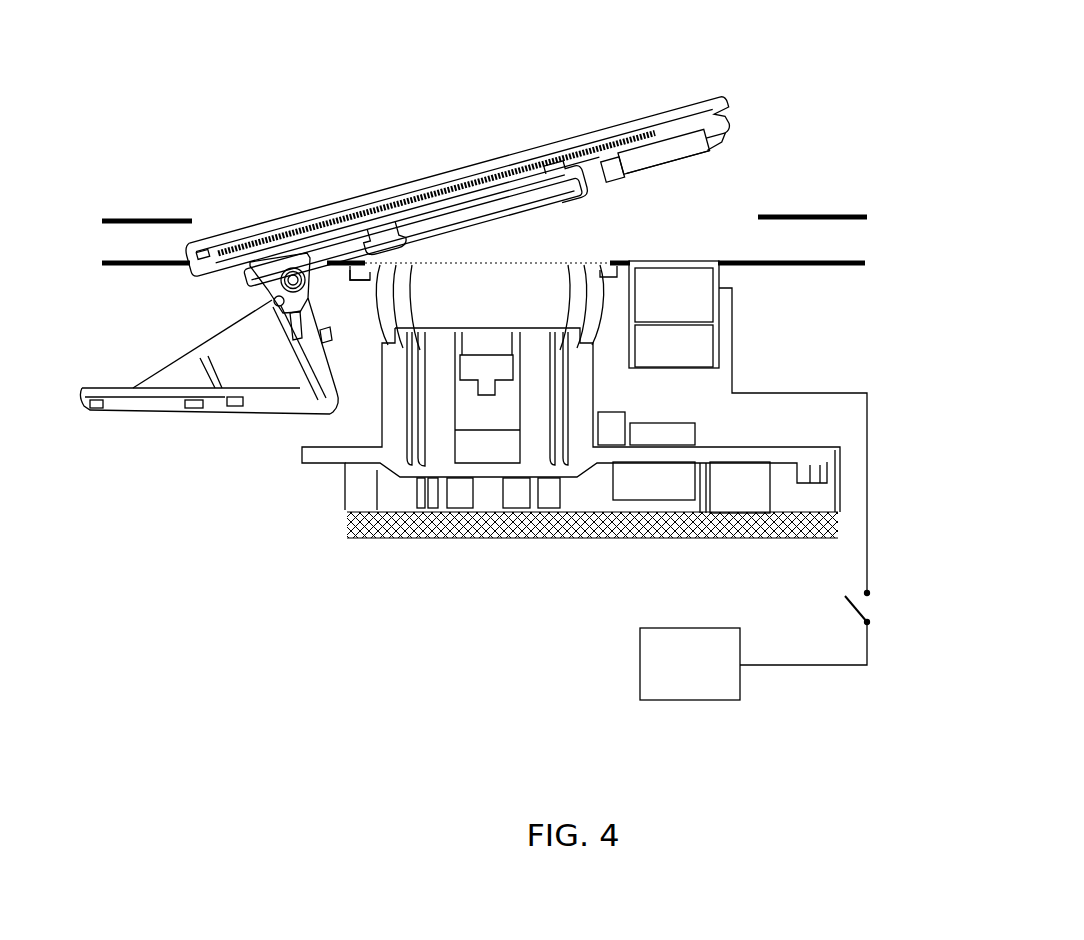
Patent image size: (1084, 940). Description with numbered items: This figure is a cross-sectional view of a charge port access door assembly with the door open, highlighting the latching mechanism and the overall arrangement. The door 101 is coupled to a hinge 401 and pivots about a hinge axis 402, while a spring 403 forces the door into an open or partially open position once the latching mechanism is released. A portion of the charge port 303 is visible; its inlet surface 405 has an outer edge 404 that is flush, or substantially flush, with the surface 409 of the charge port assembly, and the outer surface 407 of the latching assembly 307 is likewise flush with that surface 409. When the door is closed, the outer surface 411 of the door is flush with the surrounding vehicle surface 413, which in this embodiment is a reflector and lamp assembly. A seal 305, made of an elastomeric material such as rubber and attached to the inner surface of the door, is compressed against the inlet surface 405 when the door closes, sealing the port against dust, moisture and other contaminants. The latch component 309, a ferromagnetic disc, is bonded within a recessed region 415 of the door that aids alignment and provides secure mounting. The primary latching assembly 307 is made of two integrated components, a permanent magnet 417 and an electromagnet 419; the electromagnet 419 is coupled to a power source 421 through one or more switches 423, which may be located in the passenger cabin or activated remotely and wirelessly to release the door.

The door 101 is at (487, 166).
The charge port 303 is at (368, 409).
The seal 305 is at (503, 217).
The latching assembly 307 is at (608, 311).
The latch component 309 is at (666, 153).
The hinge 401 is at (240, 360).
The hinge axis 402 is at (292, 281).
The spring 403 is at (280, 304).
The outer edge 404 is at (369, 243).
The inlet surface 405 is at (432, 277).
The outer surface 407 is at (708, 248).
The surface 409 is at (788, 261).
The outer surface 411 is at (593, 120).
The surrounding vehicle surface 413 is at (815, 215).
The recessed region 415 is at (620, 164).
The permanent magnet 417 is at (674, 346).
The electromagnet 419 is at (674, 314).
The power source 421 is at (692, 701).
The switch 423 is at (822, 605).